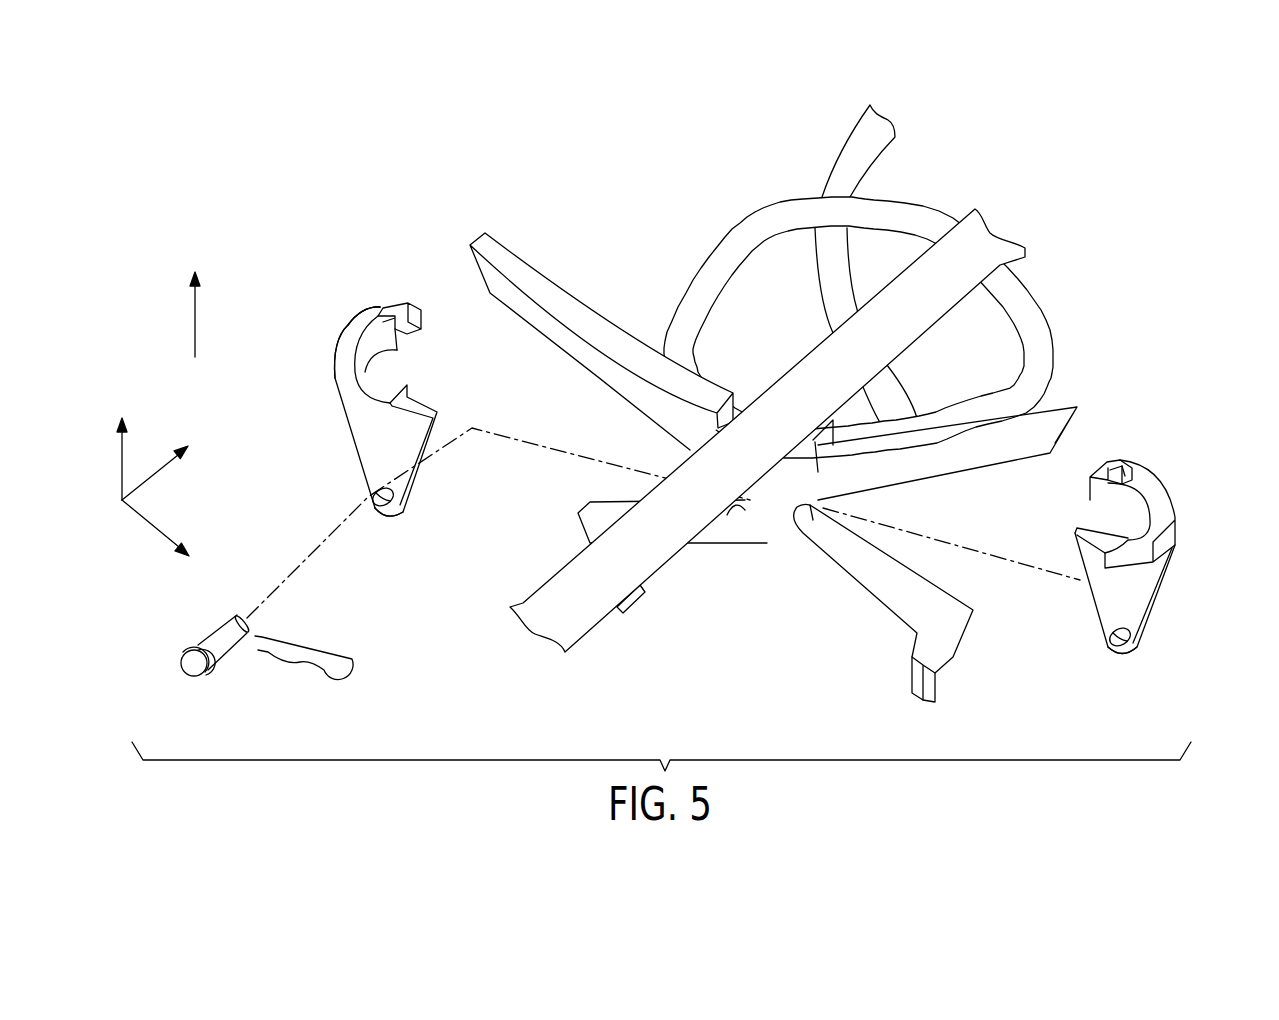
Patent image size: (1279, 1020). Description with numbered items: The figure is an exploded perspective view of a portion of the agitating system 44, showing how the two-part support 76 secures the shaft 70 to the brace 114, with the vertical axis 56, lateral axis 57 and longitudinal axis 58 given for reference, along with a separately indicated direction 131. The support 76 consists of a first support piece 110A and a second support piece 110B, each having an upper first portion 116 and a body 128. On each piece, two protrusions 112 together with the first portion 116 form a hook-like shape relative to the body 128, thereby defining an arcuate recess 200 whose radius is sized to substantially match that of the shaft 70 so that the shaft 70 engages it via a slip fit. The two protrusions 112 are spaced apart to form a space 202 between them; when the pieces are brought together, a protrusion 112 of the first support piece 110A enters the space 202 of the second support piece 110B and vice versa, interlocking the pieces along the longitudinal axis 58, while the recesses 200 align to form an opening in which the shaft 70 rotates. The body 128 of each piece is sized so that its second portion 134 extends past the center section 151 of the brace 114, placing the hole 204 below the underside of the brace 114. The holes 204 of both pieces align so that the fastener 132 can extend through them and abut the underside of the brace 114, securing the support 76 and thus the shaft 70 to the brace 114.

The agitating system 44 is at (728, 361).
The vertical axis 56 is at (122, 467).
The lateral axis 57 is at (150, 528).
The longitudinal axis 58 is at (150, 480).
The shaft 70 is at (782, 377).
The support 76 is at (322, 360).
The first support piece 110A is at (736, 465).
The second support piece 110B is at (1170, 468).
The protrusions 112 is at (415, 308).
The brace 114 is at (935, 595).
The first portion 116 is at (343, 329).
The body 128 is at (350, 421).
The upward direction 131 is at (195, 320).
The fastener 132 is at (195, 668).
The second portion 134 is at (385, 517).
The center section 151 is at (780, 520).
The recess 200 is at (410, 375).
The space 202 is at (415, 357).
The hole 204 is at (372, 492).